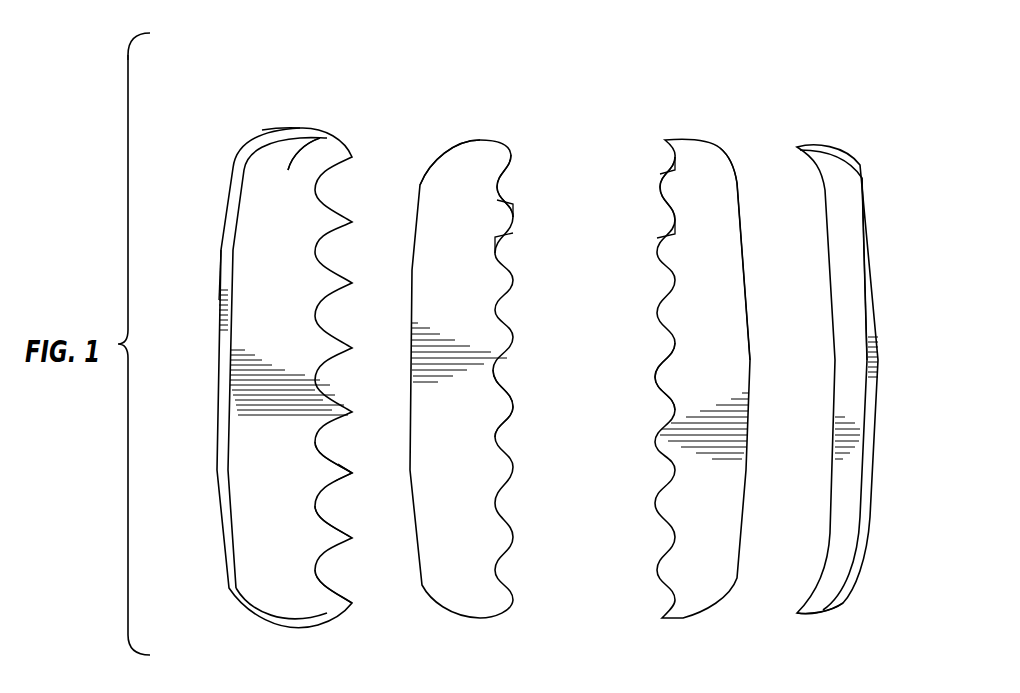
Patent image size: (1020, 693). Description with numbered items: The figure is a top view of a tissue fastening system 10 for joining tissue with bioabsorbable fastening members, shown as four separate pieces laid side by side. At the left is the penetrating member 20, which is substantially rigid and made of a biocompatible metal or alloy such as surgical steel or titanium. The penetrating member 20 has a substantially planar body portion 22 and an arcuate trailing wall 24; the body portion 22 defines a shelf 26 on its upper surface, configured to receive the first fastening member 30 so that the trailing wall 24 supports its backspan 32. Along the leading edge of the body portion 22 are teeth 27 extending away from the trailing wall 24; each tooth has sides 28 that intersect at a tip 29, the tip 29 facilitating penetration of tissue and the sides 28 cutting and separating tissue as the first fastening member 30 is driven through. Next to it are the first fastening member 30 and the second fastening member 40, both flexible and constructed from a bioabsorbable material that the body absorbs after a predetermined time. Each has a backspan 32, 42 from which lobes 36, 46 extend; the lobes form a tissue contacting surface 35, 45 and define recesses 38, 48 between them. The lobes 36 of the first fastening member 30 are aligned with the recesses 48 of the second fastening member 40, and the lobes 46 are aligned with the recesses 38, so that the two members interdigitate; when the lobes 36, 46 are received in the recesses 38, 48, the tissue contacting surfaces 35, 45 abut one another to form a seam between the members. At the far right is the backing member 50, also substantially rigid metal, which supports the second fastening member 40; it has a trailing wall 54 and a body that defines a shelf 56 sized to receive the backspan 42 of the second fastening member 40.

The fastening system 10 is at (598, 39).
The penetrating member 20 is at (283, 128).
The body portion 22 is at (312, 128).
The trailing wall 24 is at (227, 272).
The shelf 26 is at (325, 147).
The teeth 27 is at (337, 473).
The sides 28 is at (322, 462).
The tip 29 is at (350, 472).
The first fastening member 30 is at (478, 140).
The backspan 32 is at (420, 185).
The tissue contacting surface 35 is at (513, 353).
The lobes 36 is at (502, 157).
The recesses 38 is at (498, 187).
The second fastening member 40 is at (702, 142).
The backspan 42 is at (737, 183).
The tissue contacting surface 45 is at (655, 378).
The lobes 46 is at (662, 185).
The recesses 48 is at (672, 158).
The backing member 50 is at (845, 148).
The trailing wall 54 is at (865, 230).
The shelf 56 is at (840, 565).